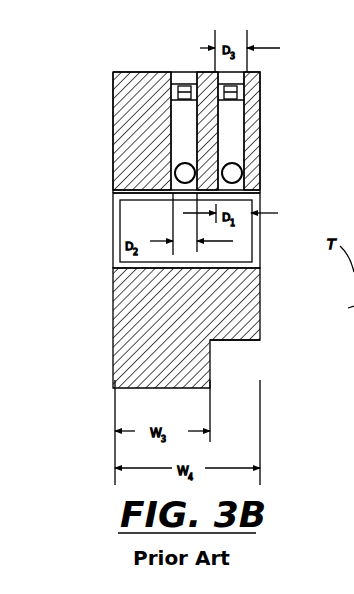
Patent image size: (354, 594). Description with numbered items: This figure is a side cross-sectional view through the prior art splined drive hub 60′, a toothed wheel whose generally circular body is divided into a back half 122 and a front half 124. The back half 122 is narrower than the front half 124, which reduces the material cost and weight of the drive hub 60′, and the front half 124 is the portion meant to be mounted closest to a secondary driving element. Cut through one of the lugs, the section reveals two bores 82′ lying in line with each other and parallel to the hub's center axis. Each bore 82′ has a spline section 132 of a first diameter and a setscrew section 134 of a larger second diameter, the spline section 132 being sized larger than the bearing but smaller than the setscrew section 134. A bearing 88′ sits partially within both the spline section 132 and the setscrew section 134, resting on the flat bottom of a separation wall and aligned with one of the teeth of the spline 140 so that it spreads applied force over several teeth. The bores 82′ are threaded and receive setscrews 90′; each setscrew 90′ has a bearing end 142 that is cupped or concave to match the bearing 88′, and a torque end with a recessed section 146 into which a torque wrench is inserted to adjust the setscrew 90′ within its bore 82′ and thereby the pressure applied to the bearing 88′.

The splined drive hub 60′ is at (135, 73).
The bore 82′ is at (160, 73).
The recessed section 146 is at (150, 96).
The setscrew 90′ is at (150, 137).
The bearing 88′ is at (122, 206).
The setscrew section 134 is at (258, 100).
The bearing end 142 is at (262, 145).
The spline 140 is at (262, 95).
The spline section 132 is at (258, 191).
The back half 122 is at (145, 390).
The front half 124 is at (237, 343).